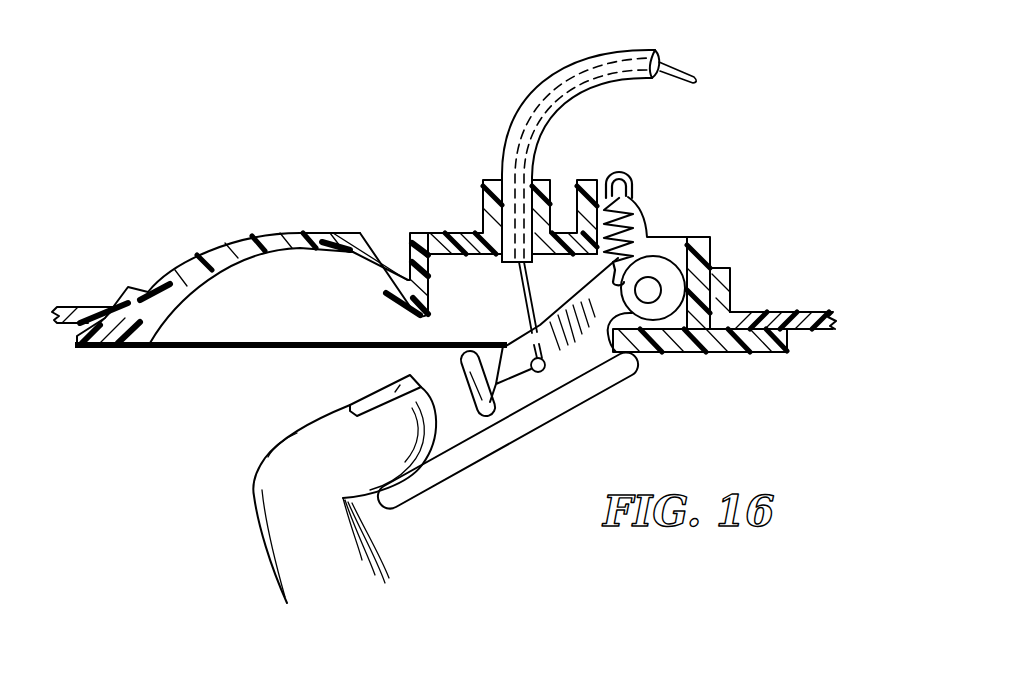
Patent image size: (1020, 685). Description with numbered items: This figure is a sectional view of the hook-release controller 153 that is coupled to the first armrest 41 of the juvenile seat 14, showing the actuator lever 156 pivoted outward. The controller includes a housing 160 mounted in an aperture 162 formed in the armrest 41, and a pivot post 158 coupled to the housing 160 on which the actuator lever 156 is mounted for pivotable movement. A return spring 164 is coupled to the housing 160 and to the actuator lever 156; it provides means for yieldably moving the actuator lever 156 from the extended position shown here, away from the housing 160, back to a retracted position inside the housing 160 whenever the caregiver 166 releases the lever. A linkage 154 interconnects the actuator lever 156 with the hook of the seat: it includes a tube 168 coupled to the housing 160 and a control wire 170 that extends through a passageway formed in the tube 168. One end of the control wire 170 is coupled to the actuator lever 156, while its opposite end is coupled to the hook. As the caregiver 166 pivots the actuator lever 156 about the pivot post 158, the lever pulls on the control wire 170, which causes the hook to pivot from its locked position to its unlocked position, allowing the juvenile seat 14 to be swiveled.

The juvenile seat 14 is at (805, 333).
The first armrest 41 is at (87, 307).
The hook-release controller 153 is at (338, 181).
The linkage 154 is at (525, 102).
The actuator lever 156 is at (413, 489).
The pivot post 158 is at (652, 288).
The housing 160 is at (233, 241).
The aperture 162 is at (153, 318).
The return spring 164 is at (618, 258).
The caregiver 166 is at (257, 318).
The tube 168 is at (587, 67).
The control wire 170 is at (521, 300).